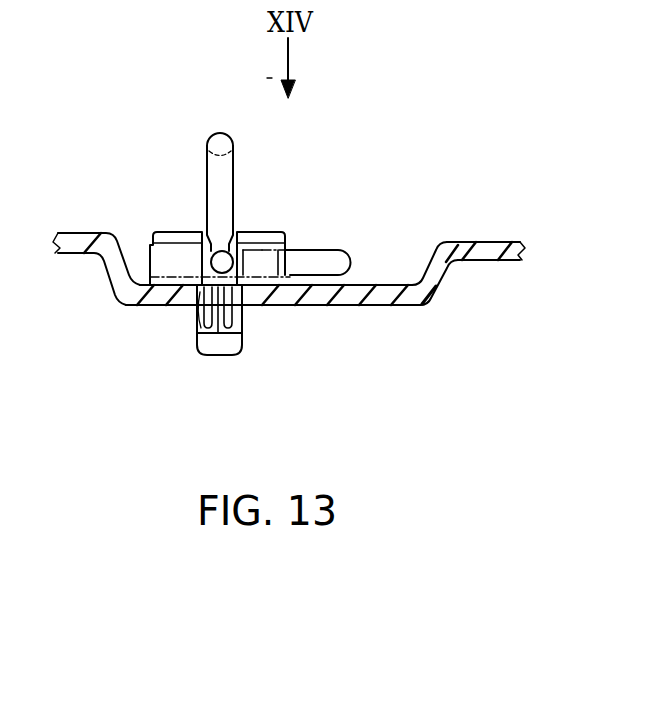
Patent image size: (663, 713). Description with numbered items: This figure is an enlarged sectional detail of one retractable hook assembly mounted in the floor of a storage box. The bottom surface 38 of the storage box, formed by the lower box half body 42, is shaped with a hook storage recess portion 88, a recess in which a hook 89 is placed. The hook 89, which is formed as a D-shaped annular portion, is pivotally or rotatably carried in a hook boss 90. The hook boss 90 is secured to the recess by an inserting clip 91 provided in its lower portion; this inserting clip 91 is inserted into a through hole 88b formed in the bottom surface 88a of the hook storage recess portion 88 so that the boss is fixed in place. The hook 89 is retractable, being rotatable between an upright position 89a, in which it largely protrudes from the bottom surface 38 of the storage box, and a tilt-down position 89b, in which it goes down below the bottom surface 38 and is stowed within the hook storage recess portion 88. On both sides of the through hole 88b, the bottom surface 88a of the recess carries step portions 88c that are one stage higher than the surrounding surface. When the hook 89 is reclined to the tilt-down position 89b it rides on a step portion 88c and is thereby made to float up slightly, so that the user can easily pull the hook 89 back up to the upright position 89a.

The bottom surface 38 is at (77, 232).
The lower box half body 42 is at (80, 255).
The hook storage recess portion 88 is at (444, 294).
The bottom surface of the hook storage recess portion 88a is at (360, 287).
The through hole 88b is at (200, 306).
The step portion 88c is at (185, 276).
The hook 89 is at (146, 194).
The upright position 89a is at (207, 164).
The tilt-down position 89b is at (316, 250).
The hook boss 90 is at (256, 232).
The inserting clip 91 is at (226, 345).